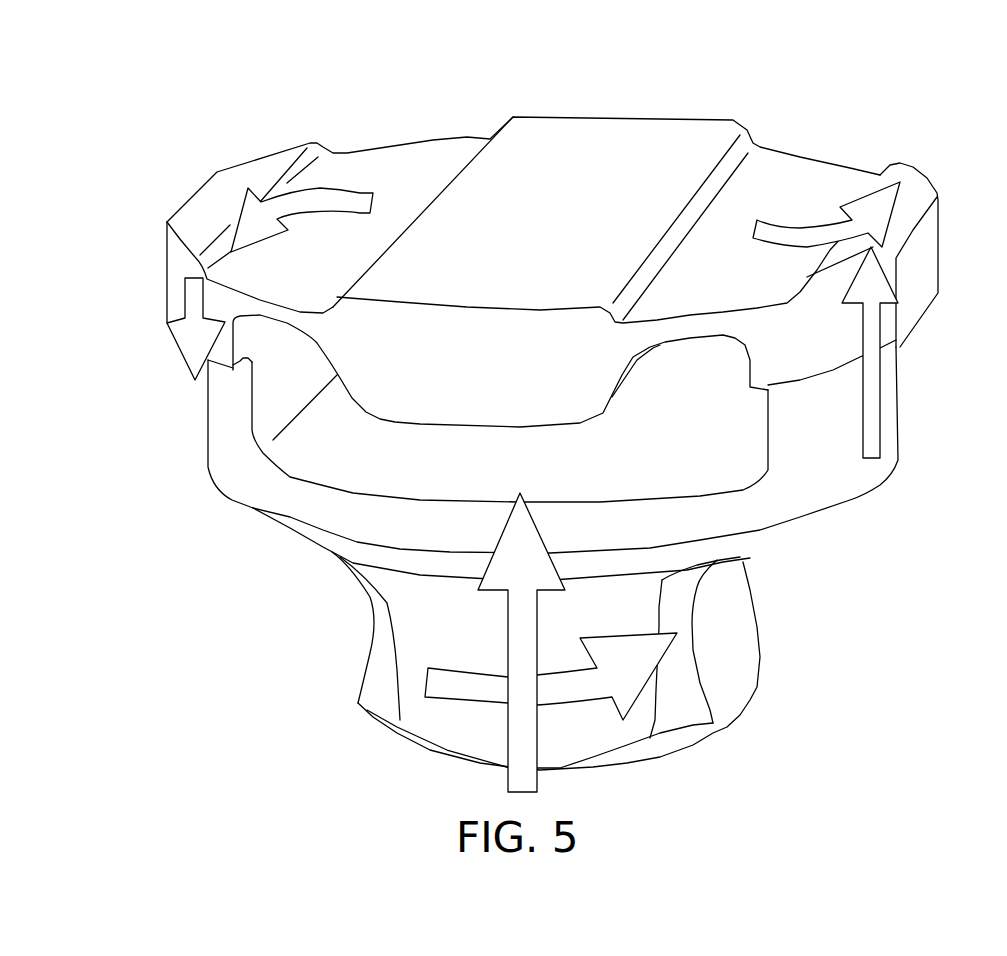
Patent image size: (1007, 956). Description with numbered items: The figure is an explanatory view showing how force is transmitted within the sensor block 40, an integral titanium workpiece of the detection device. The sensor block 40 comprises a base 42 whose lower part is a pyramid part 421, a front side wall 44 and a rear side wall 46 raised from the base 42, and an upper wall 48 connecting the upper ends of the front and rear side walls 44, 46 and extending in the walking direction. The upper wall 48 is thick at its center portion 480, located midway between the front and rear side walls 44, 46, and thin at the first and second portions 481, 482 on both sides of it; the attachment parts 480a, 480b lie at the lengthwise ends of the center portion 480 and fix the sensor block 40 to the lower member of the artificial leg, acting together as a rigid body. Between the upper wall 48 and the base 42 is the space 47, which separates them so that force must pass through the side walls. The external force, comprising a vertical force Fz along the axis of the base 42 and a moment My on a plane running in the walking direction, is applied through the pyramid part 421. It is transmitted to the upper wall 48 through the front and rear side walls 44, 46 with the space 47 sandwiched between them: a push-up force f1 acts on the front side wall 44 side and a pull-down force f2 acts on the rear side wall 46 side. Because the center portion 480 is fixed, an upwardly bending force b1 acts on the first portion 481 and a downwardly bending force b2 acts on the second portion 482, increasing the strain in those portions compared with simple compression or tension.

The sensor block 40 is at (539, 430).
The base 42 is at (571, 661).
The pyramid part 421 is at (730, 675).
The front side wall 44 is at (833, 467).
The rear side wall 46 is at (232, 393).
The space 47 is at (693, 450).
The upper wall 48 is at (552, 188).
The center portion 480 is at (532, 163).
The attachment part 480a is at (617, 128).
The attachment part 480b is at (390, 377).
The first portion 481 is at (807, 163).
The second portion 482 is at (413, 157).
The upwardly bending force b1 is at (800, 220).
The downwardly bending force b2 is at (350, 187).
The push-up force f1 is at (882, 400).
The pull-down force f2 is at (185, 290).
The vertical direction force Fz is at (528, 733).
The moment My is at (468, 707).